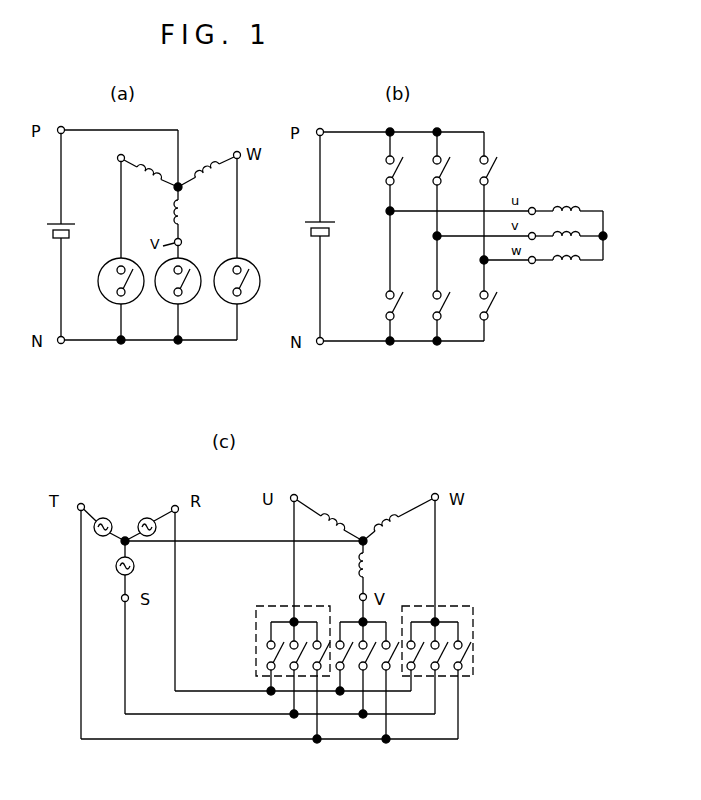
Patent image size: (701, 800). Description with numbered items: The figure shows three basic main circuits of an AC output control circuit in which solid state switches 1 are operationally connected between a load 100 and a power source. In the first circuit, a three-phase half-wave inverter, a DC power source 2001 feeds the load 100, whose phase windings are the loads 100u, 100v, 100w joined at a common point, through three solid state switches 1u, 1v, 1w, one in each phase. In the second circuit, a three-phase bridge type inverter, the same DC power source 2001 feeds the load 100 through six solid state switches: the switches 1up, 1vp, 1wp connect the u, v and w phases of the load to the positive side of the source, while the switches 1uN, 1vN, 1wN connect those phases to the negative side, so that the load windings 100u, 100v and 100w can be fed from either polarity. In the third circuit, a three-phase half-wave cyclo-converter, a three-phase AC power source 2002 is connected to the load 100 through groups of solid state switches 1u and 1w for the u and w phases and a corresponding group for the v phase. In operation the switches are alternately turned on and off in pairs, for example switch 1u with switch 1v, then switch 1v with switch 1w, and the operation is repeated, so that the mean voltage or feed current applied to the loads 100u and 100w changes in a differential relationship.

The solid state switches 1 is at (298, 493).
The switch 1u is at (111, 264).
The switch 1v is at (202, 274).
The switch 1w is at (270, 265).
The solid state switch 1up is at (393, 170).
The solid state switch 1vp is at (433, 176).
The solid state switch 1wp is at (482, 176).
The solid state switch 1uN is at (385, 305).
The solid state switch 1vN is at (433, 305).
The solid state switch 1wN is at (490, 309).
The load 100 is at (384, 349).
The load 100u is at (578, 190).
The load 100v is at (183, 224).
The load 100w is at (206, 163).
The DC power source 2001 is at (50, 233).
The AC power source 2002 is at (151, 492).